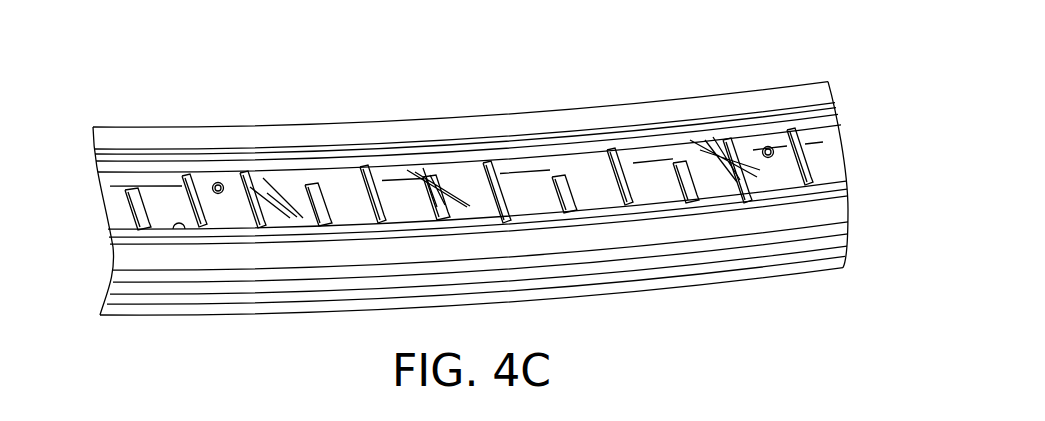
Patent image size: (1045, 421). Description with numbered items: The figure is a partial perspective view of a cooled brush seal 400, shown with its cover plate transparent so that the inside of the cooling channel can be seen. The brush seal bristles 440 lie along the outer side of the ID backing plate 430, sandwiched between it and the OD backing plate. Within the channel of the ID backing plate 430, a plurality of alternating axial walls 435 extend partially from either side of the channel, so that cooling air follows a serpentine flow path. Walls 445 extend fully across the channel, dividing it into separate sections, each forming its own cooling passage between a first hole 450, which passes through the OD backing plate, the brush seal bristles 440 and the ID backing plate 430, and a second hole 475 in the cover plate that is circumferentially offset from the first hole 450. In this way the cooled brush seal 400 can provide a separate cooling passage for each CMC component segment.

The cooled brush seal 400 is at (125, 50).
The ID backing plate 430 is at (848, 196).
The axial walls 435 is at (481, 162).
The brush seal bristles 440 is at (828, 86).
The walls 445 is at (190, 174).
The first hole 450 is at (730, 193).
The second hole 475 is at (221, 182).